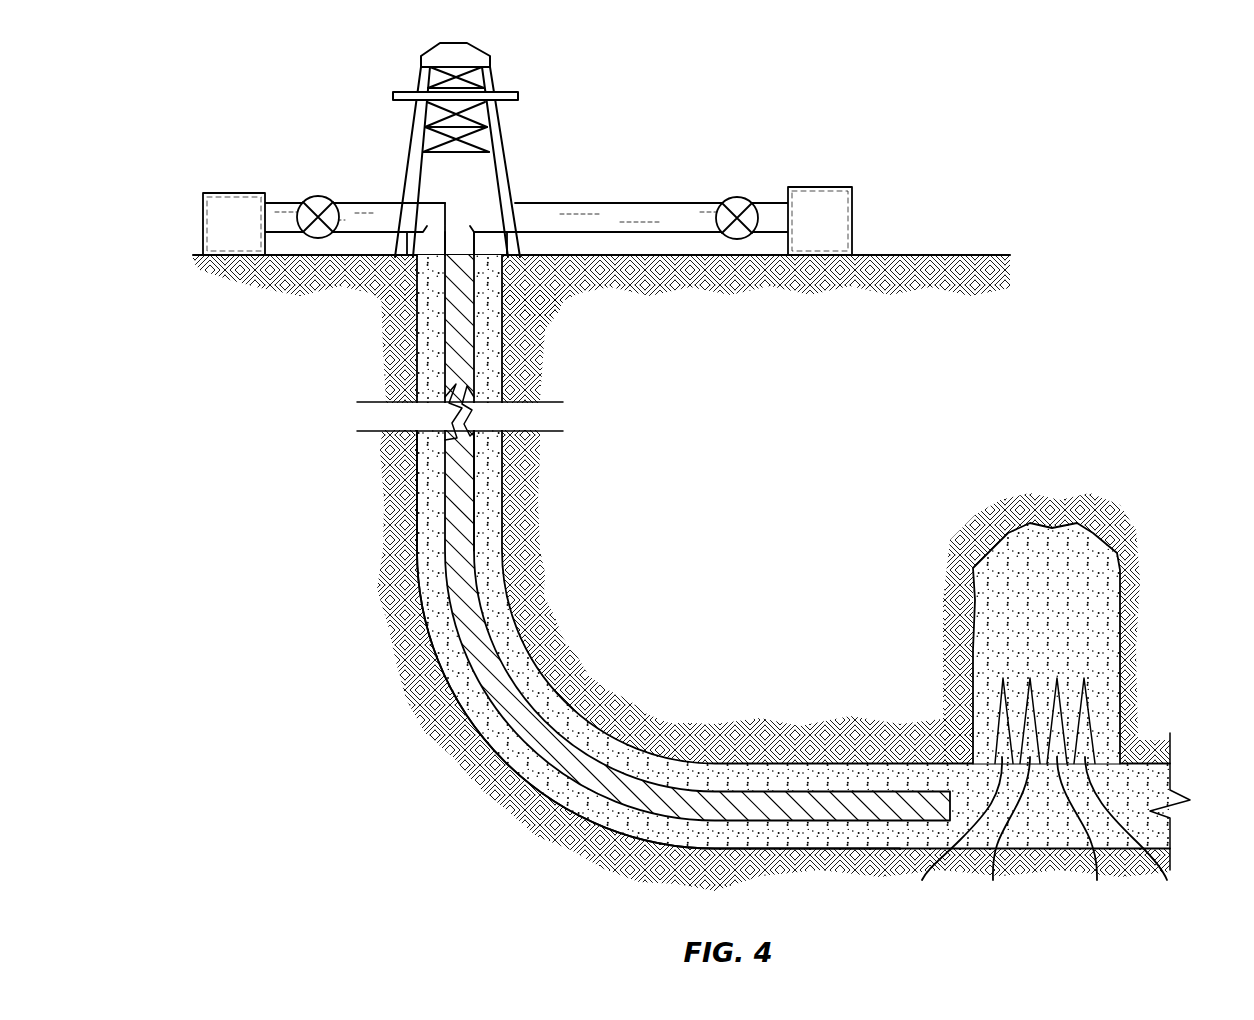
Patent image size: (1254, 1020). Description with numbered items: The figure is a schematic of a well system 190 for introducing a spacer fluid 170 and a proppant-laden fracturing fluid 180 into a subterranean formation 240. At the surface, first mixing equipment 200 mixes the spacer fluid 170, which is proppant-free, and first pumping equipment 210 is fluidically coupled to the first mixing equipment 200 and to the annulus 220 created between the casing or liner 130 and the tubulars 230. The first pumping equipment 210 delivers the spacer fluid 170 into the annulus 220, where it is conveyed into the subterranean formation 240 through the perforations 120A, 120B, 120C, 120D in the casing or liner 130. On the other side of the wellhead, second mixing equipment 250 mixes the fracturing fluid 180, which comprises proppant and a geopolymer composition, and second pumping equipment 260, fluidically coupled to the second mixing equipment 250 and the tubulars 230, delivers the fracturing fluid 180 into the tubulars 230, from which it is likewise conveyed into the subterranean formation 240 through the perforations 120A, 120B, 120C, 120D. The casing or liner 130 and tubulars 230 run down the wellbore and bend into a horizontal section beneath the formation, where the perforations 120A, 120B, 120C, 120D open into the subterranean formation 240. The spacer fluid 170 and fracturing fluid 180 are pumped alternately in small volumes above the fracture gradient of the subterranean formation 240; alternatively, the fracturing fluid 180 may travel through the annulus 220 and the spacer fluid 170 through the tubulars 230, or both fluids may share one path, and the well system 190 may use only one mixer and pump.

The perforation 120A is at (953, 795).
The perforation 120B is at (1002, 795).
The perforation 120C is at (1087, 795).
The perforation 120D is at (1137, 795).
The casing or liner 130 is at (506, 334).
The spacer fluid 170 is at (644, 814).
The fracturing fluid 180 is at (542, 743).
The well system 190 is at (801, 198).
The first mixing equipment 200 is at (235, 193).
The first pumping equipment 210 is at (315, 196).
The annulus 220 is at (432, 473).
The tubulars 230 is at (479, 460).
The subterranean formation 240 is at (1140, 570).
The second mixing equipment 250 is at (801, 187).
The second pumping equipment 260 is at (737, 197).